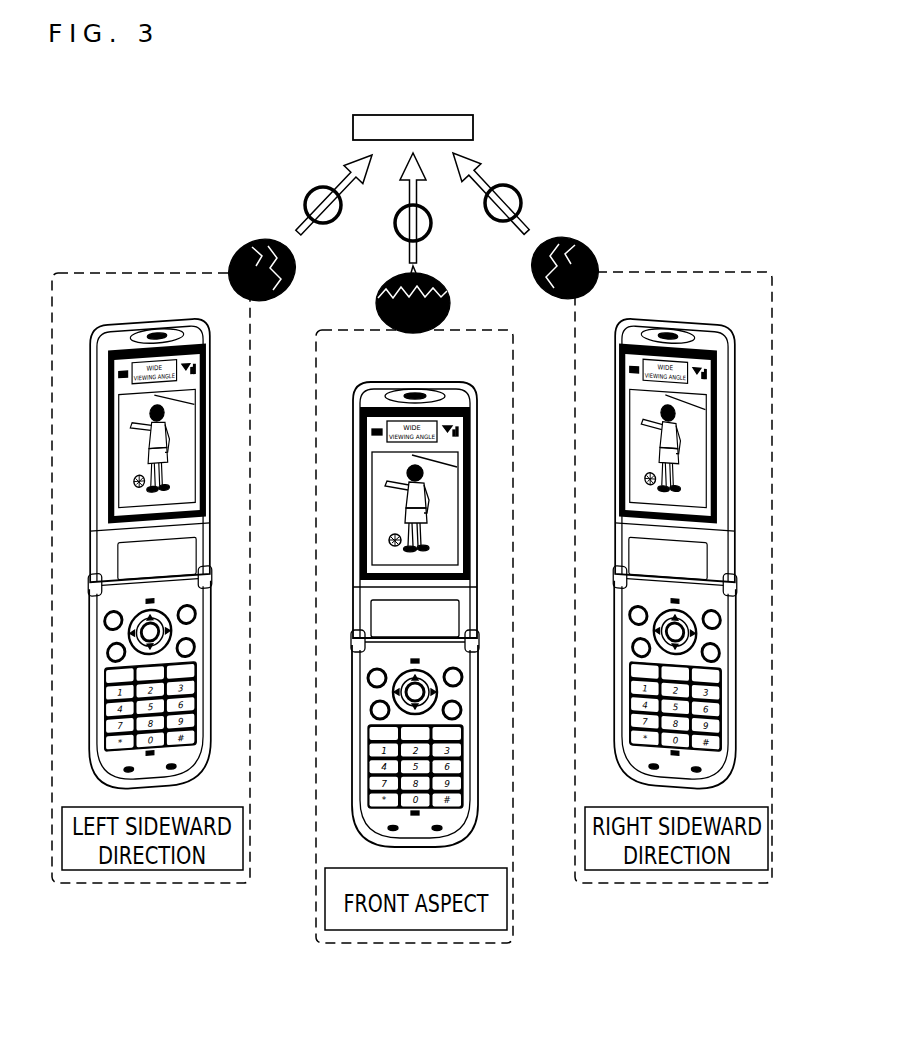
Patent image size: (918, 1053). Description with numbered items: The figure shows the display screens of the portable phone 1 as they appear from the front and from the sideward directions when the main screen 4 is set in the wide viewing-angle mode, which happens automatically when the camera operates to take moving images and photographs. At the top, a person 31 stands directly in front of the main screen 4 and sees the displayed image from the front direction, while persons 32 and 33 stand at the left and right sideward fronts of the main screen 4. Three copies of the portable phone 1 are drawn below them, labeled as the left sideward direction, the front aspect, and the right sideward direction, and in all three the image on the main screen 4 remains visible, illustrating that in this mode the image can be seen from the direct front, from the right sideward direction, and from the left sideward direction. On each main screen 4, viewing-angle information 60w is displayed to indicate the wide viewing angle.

The portable phone 1 is at (473, 124).
The main screen 4 is at (197, 480).
The person 31 is at (450, 303).
The person 32 is at (232, 249).
The person 33 is at (593, 246).
The viewing-angle information 60w is at (181, 382).